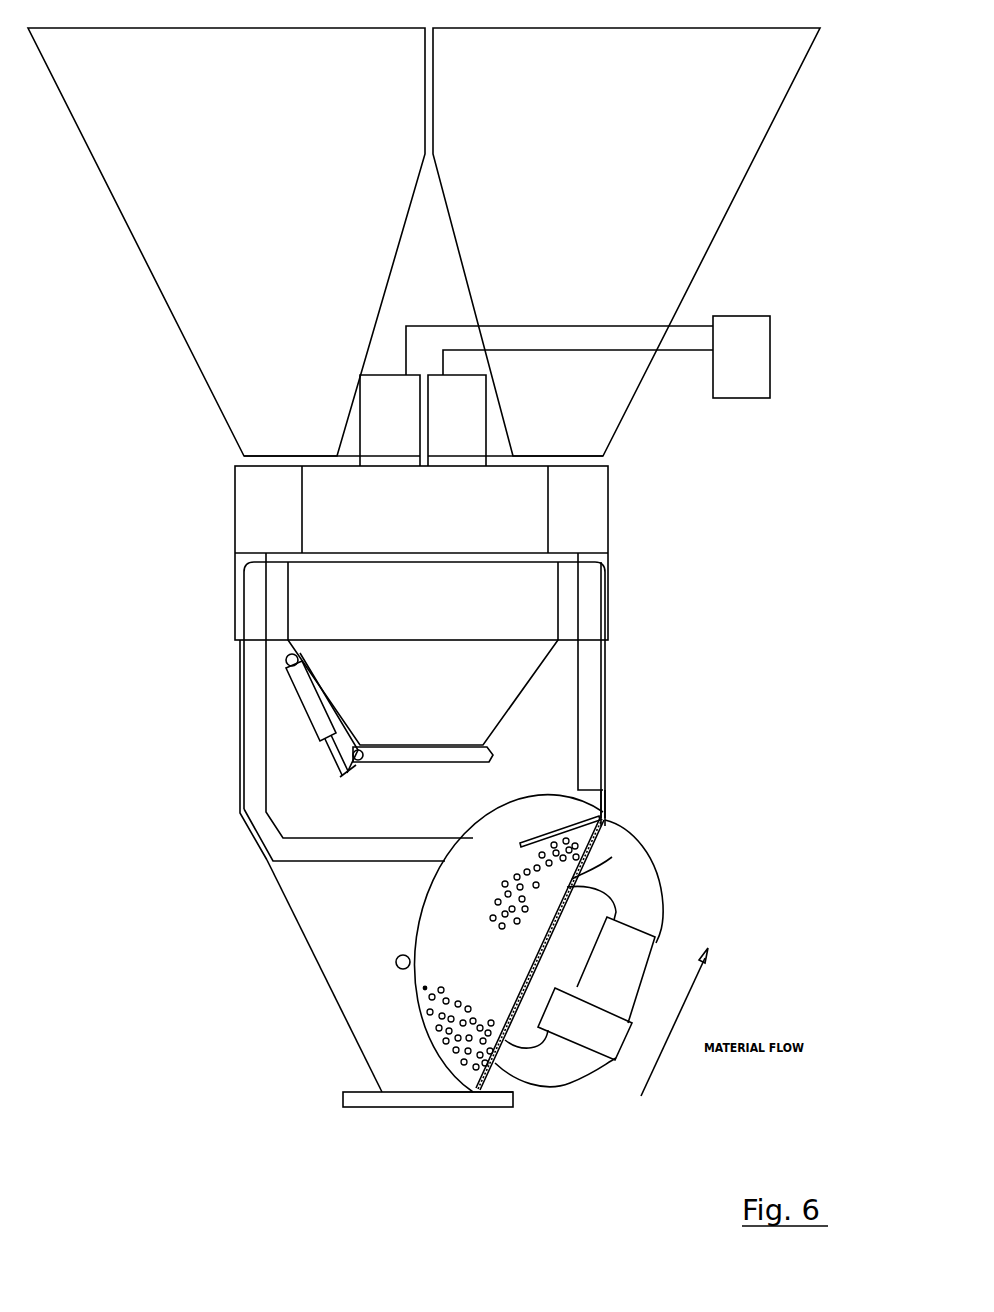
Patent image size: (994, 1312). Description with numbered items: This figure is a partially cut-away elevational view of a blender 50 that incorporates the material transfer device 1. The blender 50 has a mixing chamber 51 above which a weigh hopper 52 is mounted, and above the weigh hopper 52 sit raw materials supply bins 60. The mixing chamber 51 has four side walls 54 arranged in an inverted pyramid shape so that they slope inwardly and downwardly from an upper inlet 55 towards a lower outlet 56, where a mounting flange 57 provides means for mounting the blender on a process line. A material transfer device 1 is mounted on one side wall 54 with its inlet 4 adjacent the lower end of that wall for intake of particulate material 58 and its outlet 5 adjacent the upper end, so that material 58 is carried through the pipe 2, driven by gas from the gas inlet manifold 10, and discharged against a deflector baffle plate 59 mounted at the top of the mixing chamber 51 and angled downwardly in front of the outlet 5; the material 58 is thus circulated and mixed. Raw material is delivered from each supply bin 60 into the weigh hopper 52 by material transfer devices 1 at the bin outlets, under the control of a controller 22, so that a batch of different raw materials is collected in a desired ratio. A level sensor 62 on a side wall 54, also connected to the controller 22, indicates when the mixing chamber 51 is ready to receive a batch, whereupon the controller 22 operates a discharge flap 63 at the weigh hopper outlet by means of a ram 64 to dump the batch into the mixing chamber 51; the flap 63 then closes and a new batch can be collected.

The material transfer device 1 is at (382, 383).
The pipe 2 is at (655, 926).
The inlet 4 is at (510, 1072).
The outlet 5 is at (590, 852).
The gas inlet manifold 10 is at (583, 1035).
The controller 22 is at (761, 331).
The blender 50 is at (742, 528).
The mixing chamber 51 is at (298, 900).
The weigh hopper 52 is at (517, 675).
The side walls 54 is at (327, 988).
The upper inlet 55 is at (406, 827).
The lower outlet 56 is at (463, 1108).
The mounting flange 57 is at (352, 1102).
The particulate material 58 is at (603, 826).
The deflector baffle plate 59 is at (614, 801).
The raw materials supply bins 60 is at (128, 194).
The level sensor 62 is at (396, 963).
The discharge flap 63 is at (393, 764).
The ram 64 is at (305, 687).